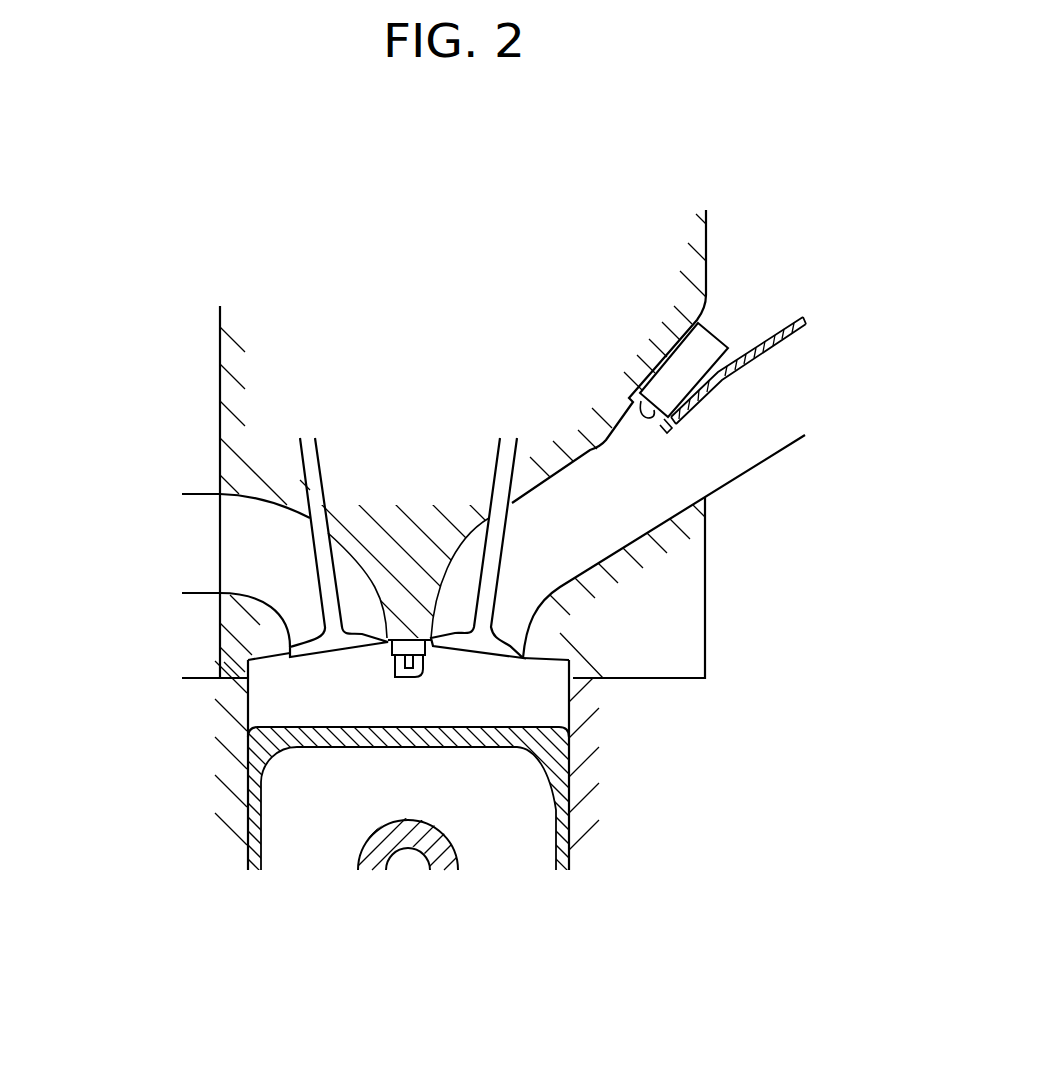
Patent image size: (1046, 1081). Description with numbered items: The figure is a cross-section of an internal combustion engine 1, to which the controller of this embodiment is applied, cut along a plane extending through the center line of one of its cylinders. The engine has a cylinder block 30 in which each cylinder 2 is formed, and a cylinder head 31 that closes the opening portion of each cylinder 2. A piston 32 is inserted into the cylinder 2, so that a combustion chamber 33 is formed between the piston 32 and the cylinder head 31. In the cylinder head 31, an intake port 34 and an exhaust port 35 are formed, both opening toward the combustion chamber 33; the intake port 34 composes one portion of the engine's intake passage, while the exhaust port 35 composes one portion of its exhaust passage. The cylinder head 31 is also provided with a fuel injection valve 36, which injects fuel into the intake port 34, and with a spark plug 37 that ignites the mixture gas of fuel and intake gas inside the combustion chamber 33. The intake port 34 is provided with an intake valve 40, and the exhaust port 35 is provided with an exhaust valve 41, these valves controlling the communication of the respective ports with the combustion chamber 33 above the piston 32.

The internal combustion engine 1 is at (425, 247).
The cylinder 2 is at (296, 748).
The cylinder block 30 is at (232, 775).
The cylinder head 31 is at (273, 390).
The piston 32 is at (522, 822).
The combustion chamber 33 is at (672, 758).
The intake port 34 is at (618, 477).
The exhaust port 35 is at (258, 553).
The fuel injection valve 36 is at (713, 333).
The spark plug 37 is at (385, 660).
The intake valve 40 is at (496, 468).
The exhaust valve 41 is at (311, 468).